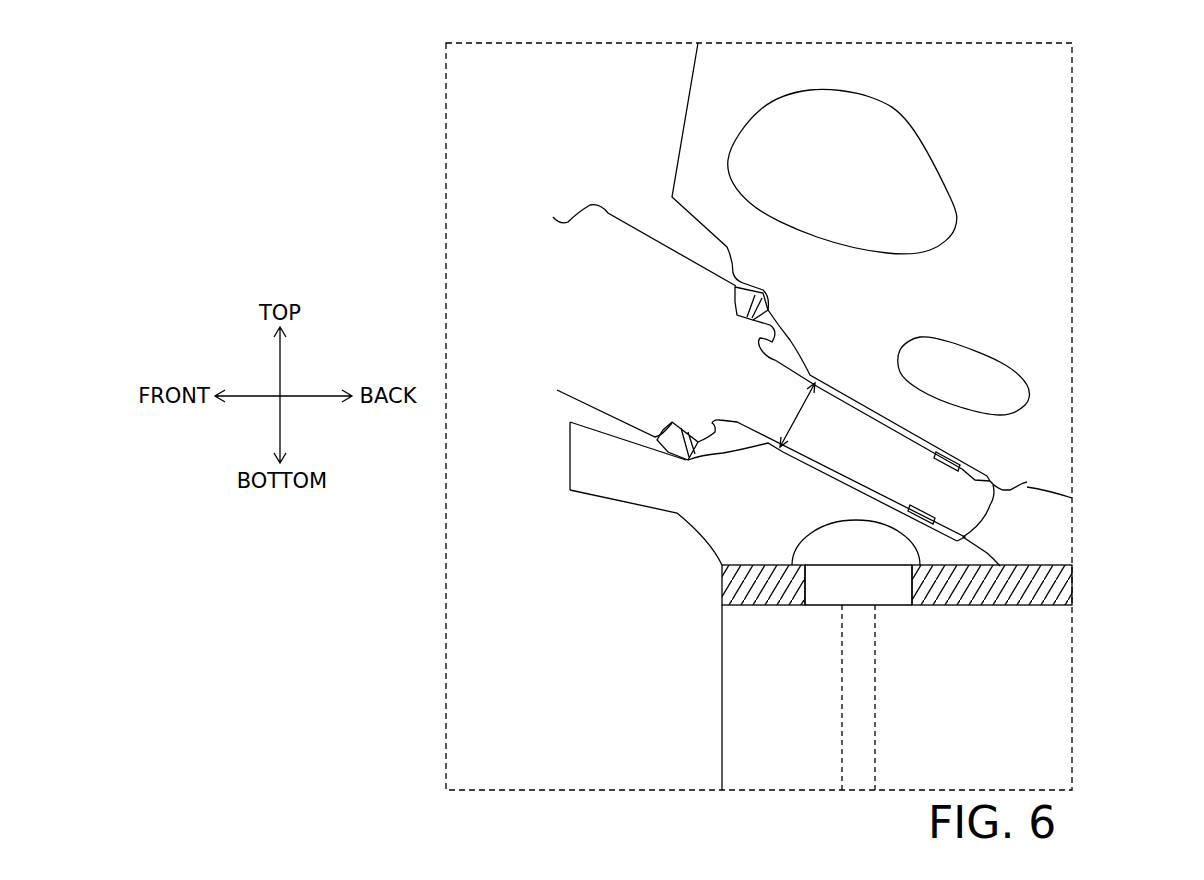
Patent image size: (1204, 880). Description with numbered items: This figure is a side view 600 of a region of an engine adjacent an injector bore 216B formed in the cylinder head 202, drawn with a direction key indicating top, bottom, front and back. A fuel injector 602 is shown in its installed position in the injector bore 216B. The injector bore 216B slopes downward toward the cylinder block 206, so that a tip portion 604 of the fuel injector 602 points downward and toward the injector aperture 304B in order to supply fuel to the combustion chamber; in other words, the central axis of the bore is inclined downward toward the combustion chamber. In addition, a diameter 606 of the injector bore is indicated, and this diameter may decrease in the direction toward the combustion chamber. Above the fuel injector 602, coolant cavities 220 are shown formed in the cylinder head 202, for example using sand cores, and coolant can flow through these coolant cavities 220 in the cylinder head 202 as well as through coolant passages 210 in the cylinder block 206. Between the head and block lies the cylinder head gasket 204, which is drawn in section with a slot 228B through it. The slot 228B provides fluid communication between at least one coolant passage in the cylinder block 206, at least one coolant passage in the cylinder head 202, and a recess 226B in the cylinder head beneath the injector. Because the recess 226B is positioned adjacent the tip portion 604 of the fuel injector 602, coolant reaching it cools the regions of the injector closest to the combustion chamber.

The side view 600 is at (1072, 178).
The cylinder head 202 is at (681, 136).
The coolant cavities 220 is at (868, 137).
The fuel injector 602 is at (614, 216).
The tip portion 604 is at (978, 478).
The diameter 606 is at (803, 413).
The injector aperture 304B is at (1027, 482).
The injector bore 216B is at (565, 417).
The recess 226B is at (812, 530).
The slot 228B is at (877, 583).
The cylinder head gasket 204 is at (717, 577).
The cylinder block 206 is at (722, 732).
The coolant passages 210 is at (876, 738).